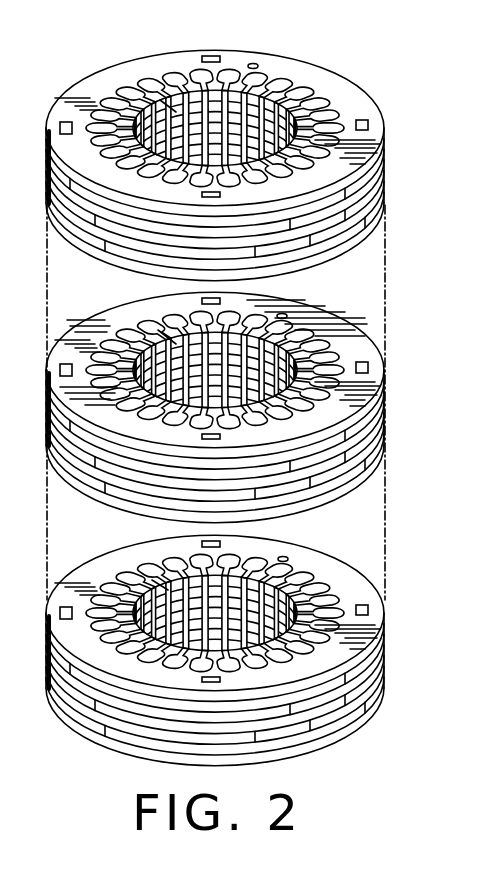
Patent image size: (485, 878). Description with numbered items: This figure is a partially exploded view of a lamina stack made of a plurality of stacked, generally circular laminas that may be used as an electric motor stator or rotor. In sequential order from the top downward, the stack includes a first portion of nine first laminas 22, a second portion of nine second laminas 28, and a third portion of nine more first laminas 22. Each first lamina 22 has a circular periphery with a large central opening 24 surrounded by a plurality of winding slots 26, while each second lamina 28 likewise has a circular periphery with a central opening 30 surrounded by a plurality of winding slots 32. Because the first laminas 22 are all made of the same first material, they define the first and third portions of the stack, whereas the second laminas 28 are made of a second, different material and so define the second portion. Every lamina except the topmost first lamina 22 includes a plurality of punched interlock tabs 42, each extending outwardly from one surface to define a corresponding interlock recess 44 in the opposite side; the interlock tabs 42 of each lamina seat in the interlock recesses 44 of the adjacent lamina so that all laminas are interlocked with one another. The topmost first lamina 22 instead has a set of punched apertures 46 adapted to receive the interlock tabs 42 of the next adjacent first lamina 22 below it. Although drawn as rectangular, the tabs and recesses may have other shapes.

The first lamina 22 is at (393, 125).
The central opening 24 is at (168, 101).
The winding slots 26 is at (252, 70).
The second lamina 28 is at (393, 367).
The central opening 30 is at (166, 333).
The winding slots 32 is at (283, 320).
The interlock tabs 42 is at (366, 357).
The interlock recess 44 is at (368, 366).
The apertures 46 is at (59, 128).